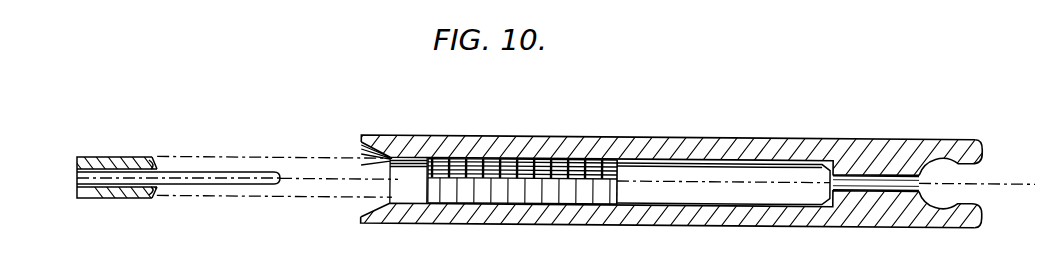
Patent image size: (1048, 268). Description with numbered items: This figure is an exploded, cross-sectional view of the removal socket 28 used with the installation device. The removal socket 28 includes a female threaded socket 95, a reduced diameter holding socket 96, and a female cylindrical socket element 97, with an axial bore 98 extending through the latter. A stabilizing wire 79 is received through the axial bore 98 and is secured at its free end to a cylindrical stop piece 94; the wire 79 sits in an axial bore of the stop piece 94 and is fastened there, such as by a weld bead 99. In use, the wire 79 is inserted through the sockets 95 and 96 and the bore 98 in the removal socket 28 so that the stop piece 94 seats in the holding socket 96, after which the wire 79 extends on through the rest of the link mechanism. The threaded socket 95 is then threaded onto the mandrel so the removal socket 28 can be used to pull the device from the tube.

The removal socket 28 is at (565, 121).
The stabilizing wire 79 is at (211, 186).
The cylindrical stop piece 94 is at (97, 157).
The female threaded socket 95 is at (505, 194).
The reduced diameter holding socket 96 is at (685, 191).
The female cylindrical socket element 97 is at (940, 135).
The axial bore 98 is at (873, 188).
The weld bead 99 is at (158, 167).